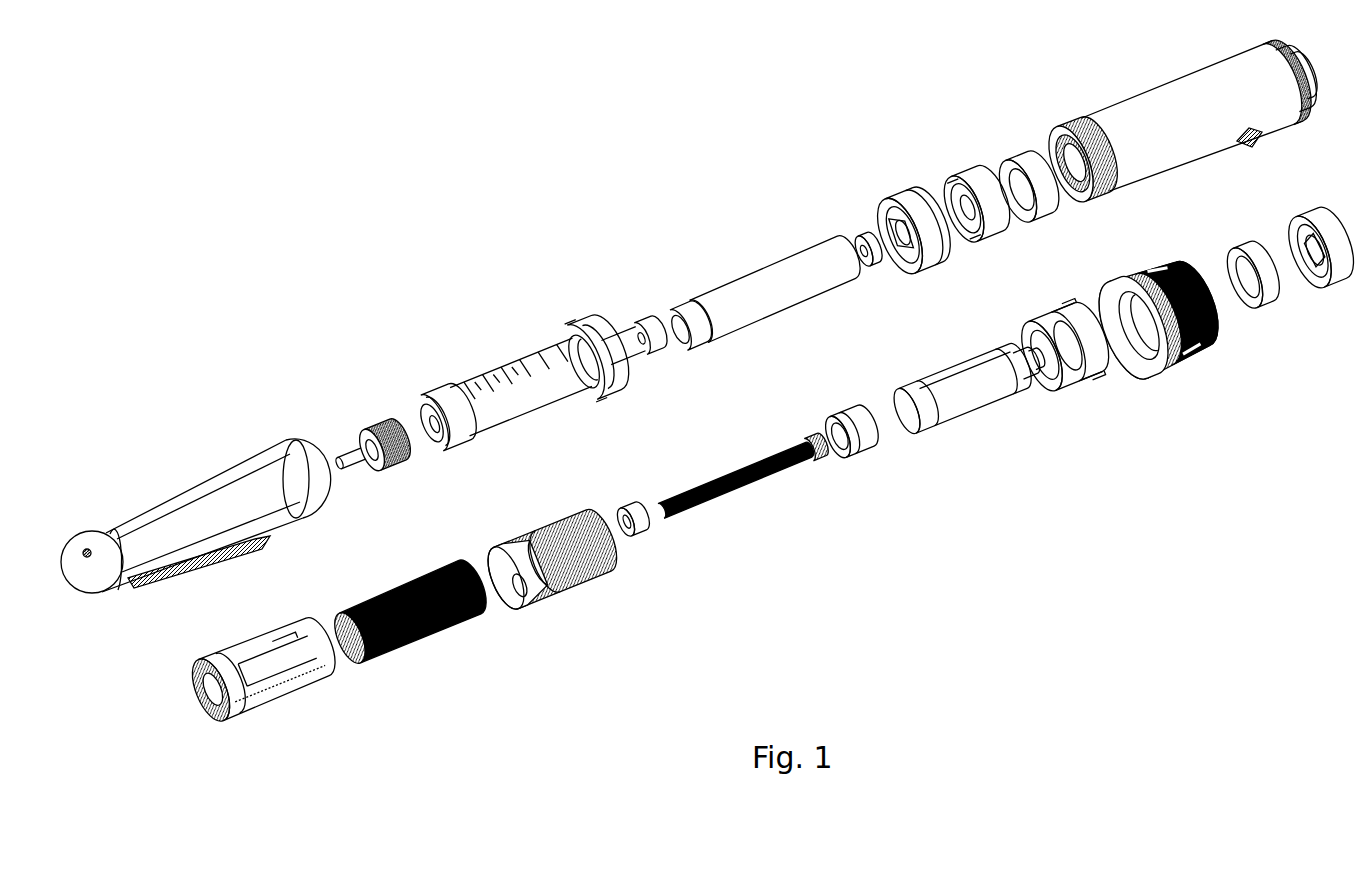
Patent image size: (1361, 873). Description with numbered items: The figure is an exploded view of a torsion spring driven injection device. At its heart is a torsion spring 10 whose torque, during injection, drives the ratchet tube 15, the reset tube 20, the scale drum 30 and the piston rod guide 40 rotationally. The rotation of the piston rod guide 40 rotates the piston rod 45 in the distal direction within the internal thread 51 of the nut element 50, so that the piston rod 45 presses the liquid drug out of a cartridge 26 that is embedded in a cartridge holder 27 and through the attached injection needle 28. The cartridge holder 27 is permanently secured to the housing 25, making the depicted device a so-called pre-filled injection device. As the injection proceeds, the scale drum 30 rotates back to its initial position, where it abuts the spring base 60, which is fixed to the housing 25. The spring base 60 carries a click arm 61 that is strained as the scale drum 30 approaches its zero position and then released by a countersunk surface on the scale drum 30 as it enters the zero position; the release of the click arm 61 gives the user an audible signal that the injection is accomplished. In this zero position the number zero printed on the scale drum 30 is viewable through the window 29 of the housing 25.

The torsion spring 10 is at (396, 633).
The ratchet tube 15 is at (256, 680).
The reset tube 20 is at (948, 400).
The housing 25 is at (1184, 121).
The cartridge 26 is at (731, 293).
The cartridge holder 27 is at (530, 368).
The injection needle 28 is at (376, 420).
The window 29 is at (1249, 141).
The scale drum 30 is at (568, 560).
The piston rod guide 40 is at (960, 168).
The piston rod 45 is at (737, 493).
The nut element 50 is at (890, 193).
The internal thread 51 is at (902, 215).
The spring base 60 is at (1065, 366).
The click arm 61 is at (1082, 305).